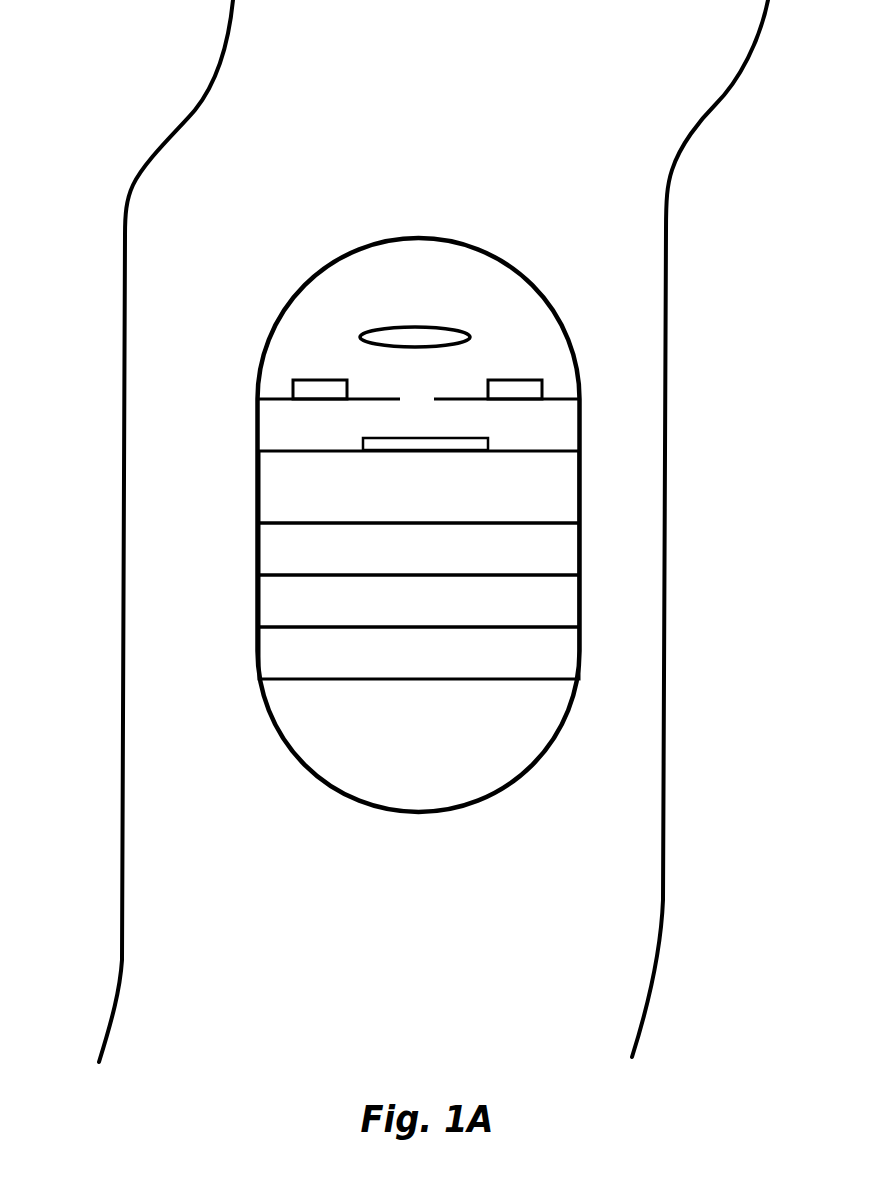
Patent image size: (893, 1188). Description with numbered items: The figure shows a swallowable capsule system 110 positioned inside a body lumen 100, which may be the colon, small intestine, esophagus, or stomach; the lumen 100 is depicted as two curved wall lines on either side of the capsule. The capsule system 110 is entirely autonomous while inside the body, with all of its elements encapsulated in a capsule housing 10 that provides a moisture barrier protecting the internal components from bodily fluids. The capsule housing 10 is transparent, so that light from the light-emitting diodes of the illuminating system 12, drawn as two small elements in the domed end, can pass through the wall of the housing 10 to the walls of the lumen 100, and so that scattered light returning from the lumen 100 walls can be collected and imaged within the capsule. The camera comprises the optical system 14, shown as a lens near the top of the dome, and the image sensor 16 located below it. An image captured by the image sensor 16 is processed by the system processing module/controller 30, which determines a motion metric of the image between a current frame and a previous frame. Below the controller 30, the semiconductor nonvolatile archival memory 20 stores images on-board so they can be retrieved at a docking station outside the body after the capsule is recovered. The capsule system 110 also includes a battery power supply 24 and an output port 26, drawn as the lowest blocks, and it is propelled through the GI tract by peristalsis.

The body lumen 100 is at (127, 297).
The swallowable capsule system 110 is at (452, 87).
The capsule housing 10 is at (487, 252).
The optical system 14 is at (413, 327).
The illuminating system 12 is at (310, 380).
The image sensor 16 is at (490, 442).
The system processing module/controller 30 is at (253, 502).
The archival memory 20 is at (253, 562).
The battery power supply 24 is at (253, 612).
The output port 26 is at (253, 662).